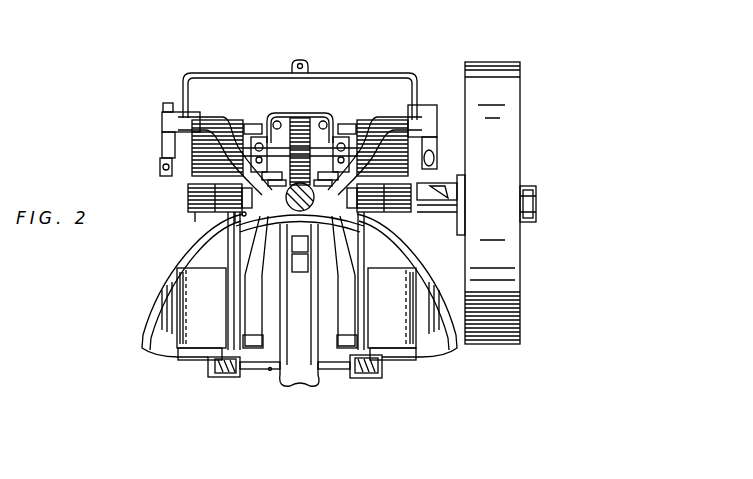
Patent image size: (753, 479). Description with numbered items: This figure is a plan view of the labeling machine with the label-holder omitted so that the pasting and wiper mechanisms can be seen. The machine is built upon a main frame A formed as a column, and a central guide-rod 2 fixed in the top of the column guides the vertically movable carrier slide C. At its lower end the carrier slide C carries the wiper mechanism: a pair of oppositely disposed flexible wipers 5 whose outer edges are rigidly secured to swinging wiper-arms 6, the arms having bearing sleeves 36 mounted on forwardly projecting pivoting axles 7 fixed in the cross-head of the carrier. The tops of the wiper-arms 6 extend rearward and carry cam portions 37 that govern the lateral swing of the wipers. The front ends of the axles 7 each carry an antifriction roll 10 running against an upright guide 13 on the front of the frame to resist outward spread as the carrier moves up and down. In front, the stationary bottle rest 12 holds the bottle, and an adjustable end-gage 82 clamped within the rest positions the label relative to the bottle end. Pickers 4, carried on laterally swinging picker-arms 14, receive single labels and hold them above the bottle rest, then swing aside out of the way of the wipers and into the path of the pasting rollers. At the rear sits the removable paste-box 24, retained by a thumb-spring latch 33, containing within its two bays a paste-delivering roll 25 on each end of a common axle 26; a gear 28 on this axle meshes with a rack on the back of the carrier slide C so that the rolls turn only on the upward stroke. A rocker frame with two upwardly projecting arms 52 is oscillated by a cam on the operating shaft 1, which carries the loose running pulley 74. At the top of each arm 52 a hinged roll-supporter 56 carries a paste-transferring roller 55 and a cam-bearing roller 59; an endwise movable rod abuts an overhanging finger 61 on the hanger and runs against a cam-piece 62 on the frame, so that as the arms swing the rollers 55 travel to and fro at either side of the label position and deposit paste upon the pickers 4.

The operating shaft 1 is at (536, 207).
The central guide-rod 2 is at (300, 197).
The pickers 4 is at (250, 334).
The wipers 5 is at (296, 308).
The wiper-arms 6 is at (212, 352).
The pivoting axles 7 is at (217, 374).
The antifriction roll 10 is at (226, 375).
The bottle rest 12 is at (298, 386).
The guide 13 is at (210, 368).
The picker-arms 14 is at (246, 264).
The paste-box 24 is at (300, 132).
The paste-delivering roll 25 is at (236, 142).
The paste-roll axle 26 is at (318, 150).
The gear 28 is at (312, 114).
The thumb-spring latch 33 is at (301, 63).
The bearing sleeves 36 is at (228, 247).
The cam portions 37 is at (142, 290).
The oscillating arms 52 is at (170, 120).
The paste-transferring roller 55 is at (188, 207).
The roll-supporter 56 is at (385, 132).
The cam-bearing roller 59 is at (220, 207).
The overhanging finger 61 is at (432, 156).
The cam-piece 62 is at (160, 170).
The loose running pulley 74 is at (468, 203).
The end-gage 82 is at (298, 252).
The main frame A is at (268, 372).
The carrier slide C is at (243, 214).